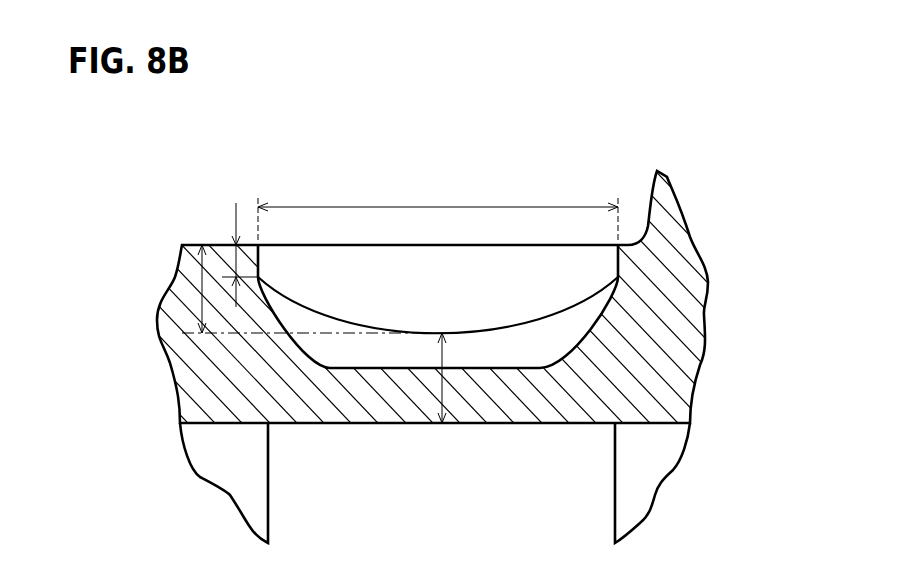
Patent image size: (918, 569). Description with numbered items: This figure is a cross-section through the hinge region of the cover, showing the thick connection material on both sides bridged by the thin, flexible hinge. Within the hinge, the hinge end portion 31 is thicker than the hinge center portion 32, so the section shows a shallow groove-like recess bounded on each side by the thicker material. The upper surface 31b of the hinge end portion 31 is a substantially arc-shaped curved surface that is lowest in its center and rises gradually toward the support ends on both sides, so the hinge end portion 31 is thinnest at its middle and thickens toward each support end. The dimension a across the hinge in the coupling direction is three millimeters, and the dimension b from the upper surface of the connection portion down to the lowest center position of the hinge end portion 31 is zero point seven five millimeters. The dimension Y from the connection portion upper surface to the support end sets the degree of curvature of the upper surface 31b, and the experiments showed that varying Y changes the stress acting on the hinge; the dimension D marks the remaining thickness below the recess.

The hinge end portion 31 is at (493, 348).
The upper surface 31b is at (465, 333).
The hinge center portion 32 is at (356, 400).
The dimension of the hinge portion in the coupling direction a is at (442, 207).
The dimension from the upper surface of the connection portion to the lowest center b is at (193, 280).
The dimension from the upper surface of the connection portion to the support end Y is at (234, 258).
The bottom thickness dimension D is at (430, 393).